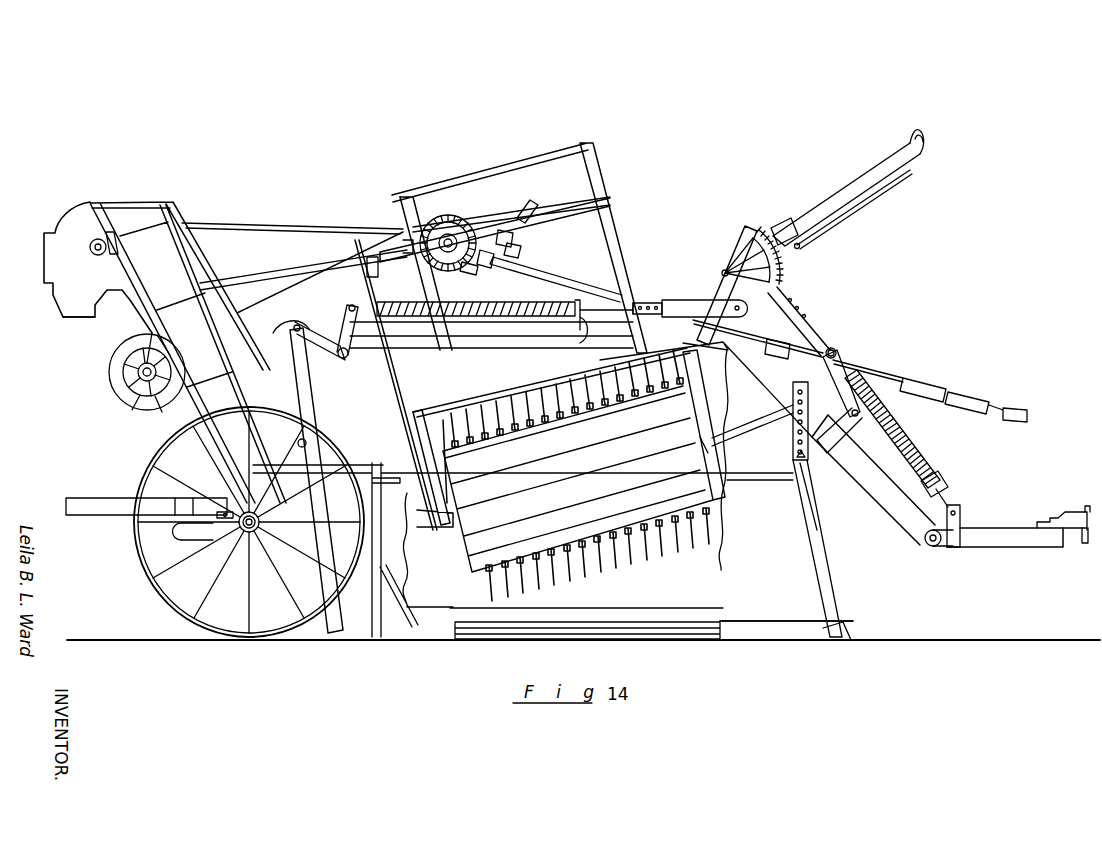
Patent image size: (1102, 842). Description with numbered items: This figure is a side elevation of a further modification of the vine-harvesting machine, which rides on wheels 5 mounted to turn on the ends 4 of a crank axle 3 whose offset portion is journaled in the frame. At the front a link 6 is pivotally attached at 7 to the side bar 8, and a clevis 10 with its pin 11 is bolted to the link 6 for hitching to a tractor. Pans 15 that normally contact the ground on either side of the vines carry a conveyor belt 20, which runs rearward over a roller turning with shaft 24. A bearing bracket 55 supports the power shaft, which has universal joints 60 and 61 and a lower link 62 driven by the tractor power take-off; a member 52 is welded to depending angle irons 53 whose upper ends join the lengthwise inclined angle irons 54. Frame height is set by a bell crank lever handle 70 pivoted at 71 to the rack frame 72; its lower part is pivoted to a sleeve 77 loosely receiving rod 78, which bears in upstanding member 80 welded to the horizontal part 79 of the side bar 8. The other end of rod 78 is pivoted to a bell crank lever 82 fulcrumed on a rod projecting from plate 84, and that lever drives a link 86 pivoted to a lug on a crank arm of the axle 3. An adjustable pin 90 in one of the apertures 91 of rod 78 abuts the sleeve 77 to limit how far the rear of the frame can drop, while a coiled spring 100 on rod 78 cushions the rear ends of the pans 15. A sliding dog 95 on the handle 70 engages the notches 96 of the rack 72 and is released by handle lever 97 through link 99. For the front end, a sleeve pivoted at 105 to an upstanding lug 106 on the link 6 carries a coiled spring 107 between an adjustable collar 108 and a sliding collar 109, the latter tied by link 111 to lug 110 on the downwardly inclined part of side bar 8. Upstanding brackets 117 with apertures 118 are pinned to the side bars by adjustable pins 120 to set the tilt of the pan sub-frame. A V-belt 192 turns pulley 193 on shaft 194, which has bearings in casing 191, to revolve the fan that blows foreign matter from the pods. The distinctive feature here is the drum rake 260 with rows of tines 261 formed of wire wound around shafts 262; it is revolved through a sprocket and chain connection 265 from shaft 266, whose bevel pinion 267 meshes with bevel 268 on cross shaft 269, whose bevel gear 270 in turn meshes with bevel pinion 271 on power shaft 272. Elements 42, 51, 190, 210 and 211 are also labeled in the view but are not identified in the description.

The crank axle 3 is at (210, 531).
The axle ends 4 is at (258, 548).
The wheels 5 is at (137, 557).
The link 6 is at (1003, 548).
The pivot 7 is at (929, 546).
The side bar 8 is at (874, 487).
The clevis 10 is at (1070, 508).
The pin 11 is at (1086, 545).
The pans 15 is at (788, 633).
The conveyor belt 20 is at (685, 640).
The shaft 24 is at (90, 245).
The belt 42 is at (251, 226).
The bracket 51 is at (495, 268).
The welded member 52 is at (521, 251).
The depending angle irons 53 is at (528, 212).
The angle irons 54 is at (568, 193).
The bearing bracket 55 is at (756, 333).
The universal joint 60 is at (792, 341).
The universal joint 61 is at (1001, 404).
The lower link 62 is at (1018, 425).
The bell crank lever handle 70 is at (853, 196).
The pivot 71 is at (724, 270).
The rack frame 72 is at (743, 241).
The sleeve 77 is at (688, 302).
The rod 78 is at (603, 312).
The horizontal part 79 is at (520, 337).
The upstanding member 80 is at (577, 327).
The bell crank lever 82 is at (290, 343).
The plate 84 is at (351, 357).
The link 86 is at (271, 394).
The adjustable pin 90 is at (658, 302).
The apertures 91 is at (645, 301).
The sliding dog 95 is at (778, 229).
The notches 96 is at (784, 267).
The handle lever 97 is at (925, 154).
The link 99 is at (875, 198).
The coiled spring 100 is at (483, 317).
The pivot 105 is at (960, 512).
The upstanding lug 106 is at (952, 545).
The coiled spring 107 is at (898, 434).
The adjustable collar 108 is at (943, 485).
The collar 109 is at (840, 345).
The upstanding lug 110 is at (827, 447).
The link 111 is at (845, 365).
The upstanding brackets 117 is at (792, 441).
The apertures 118 is at (797, 398).
The adjustable pins 120 is at (797, 406).
The pulley 190 is at (130, 392).
The casing 191 is at (147, 416).
The V-belt 192 is at (293, 289).
The pulley 193 is at (137, 371).
The shaft 194 is at (130, 405).
The housing bottom 210 is at (82, 318).
The housing 211 is at (44, 262).
The drum rake 260 is at (678, 546).
The teeth or tines 261 is at (622, 560).
The shafts 262 is at (559, 570).
The sprocket and chain connection 265 is at (400, 396).
The shaft 266 is at (380, 268).
The bevel pinion 267 is at (468, 270).
The bevel 268 is at (461, 232).
The cross shaft 269 is at (448, 232).
The bevel gear 270 is at (456, 233).
The bevel pinion 271 is at (514, 238).
The power shaft 272 is at (583, 284).